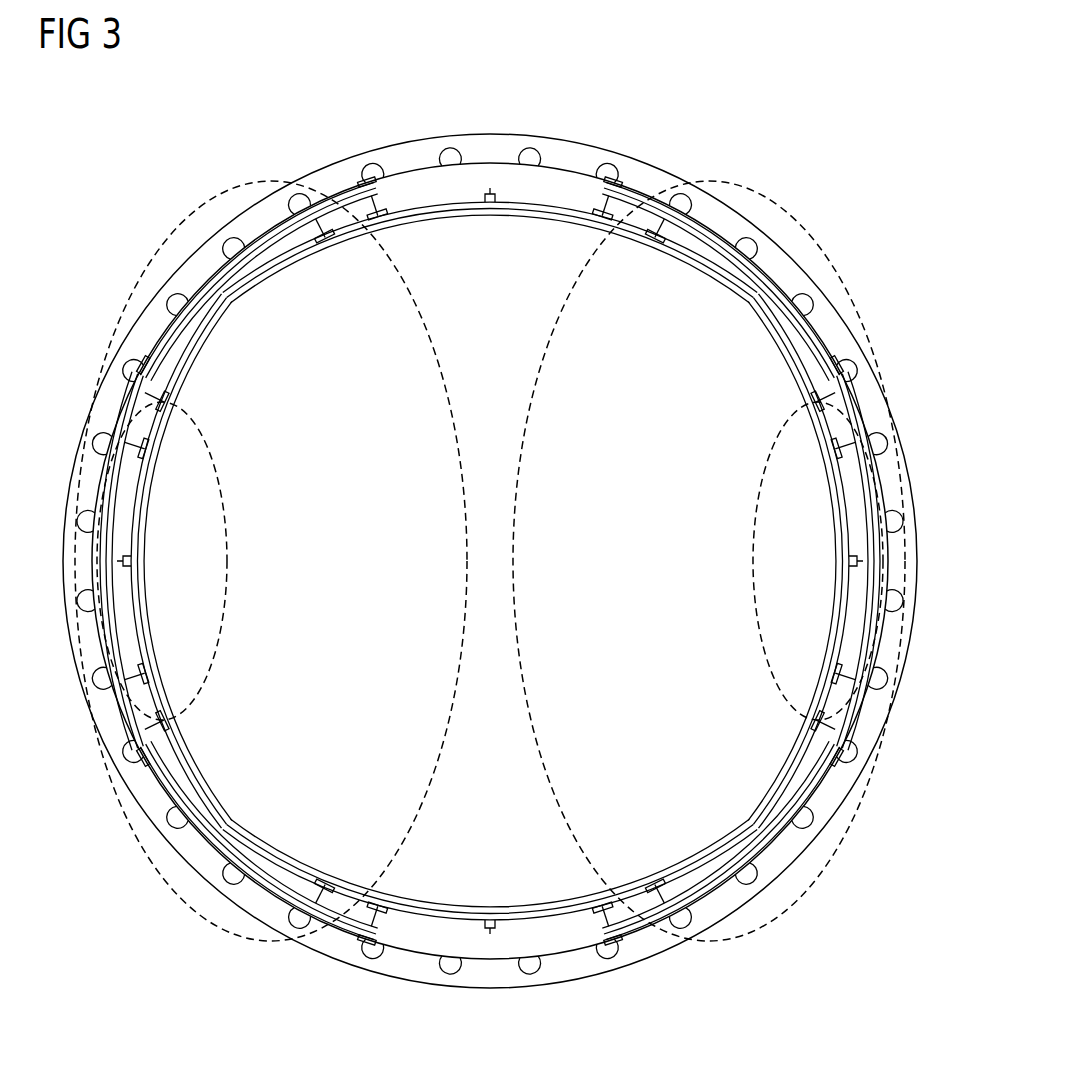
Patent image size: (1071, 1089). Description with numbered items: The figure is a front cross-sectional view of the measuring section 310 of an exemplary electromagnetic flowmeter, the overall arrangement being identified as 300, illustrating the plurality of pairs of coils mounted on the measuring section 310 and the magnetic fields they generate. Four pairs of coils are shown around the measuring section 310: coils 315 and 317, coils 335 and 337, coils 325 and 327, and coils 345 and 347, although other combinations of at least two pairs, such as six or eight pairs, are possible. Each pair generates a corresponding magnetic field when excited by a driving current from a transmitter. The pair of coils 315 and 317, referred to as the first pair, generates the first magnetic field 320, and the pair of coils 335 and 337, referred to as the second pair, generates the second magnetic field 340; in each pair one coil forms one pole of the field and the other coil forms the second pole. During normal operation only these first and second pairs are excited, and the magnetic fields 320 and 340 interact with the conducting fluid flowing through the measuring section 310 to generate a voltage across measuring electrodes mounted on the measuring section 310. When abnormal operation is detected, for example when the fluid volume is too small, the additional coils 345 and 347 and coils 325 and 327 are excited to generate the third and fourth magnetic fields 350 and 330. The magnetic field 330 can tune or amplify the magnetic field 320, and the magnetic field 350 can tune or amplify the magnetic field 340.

The ring assembly 300 is at (902, 122).
The measuring section 310 is at (489, 132).
The coil 315 is at (652, 182).
The coil 317 is at (652, 942).
The magnetic field 320 is at (575, 292).
The coil 325 is at (879, 408).
The coil 327 is at (879, 722).
The magnetic field 330 is at (750, 562).
The coil 335 is at (328, 182).
The coil 337 is at (328, 942).
The magnetic field 340 is at (420, 820).
The coil 345 is at (103, 408).
The coil 347 is at (103, 722).
The magnetic field 350 is at (230, 562).